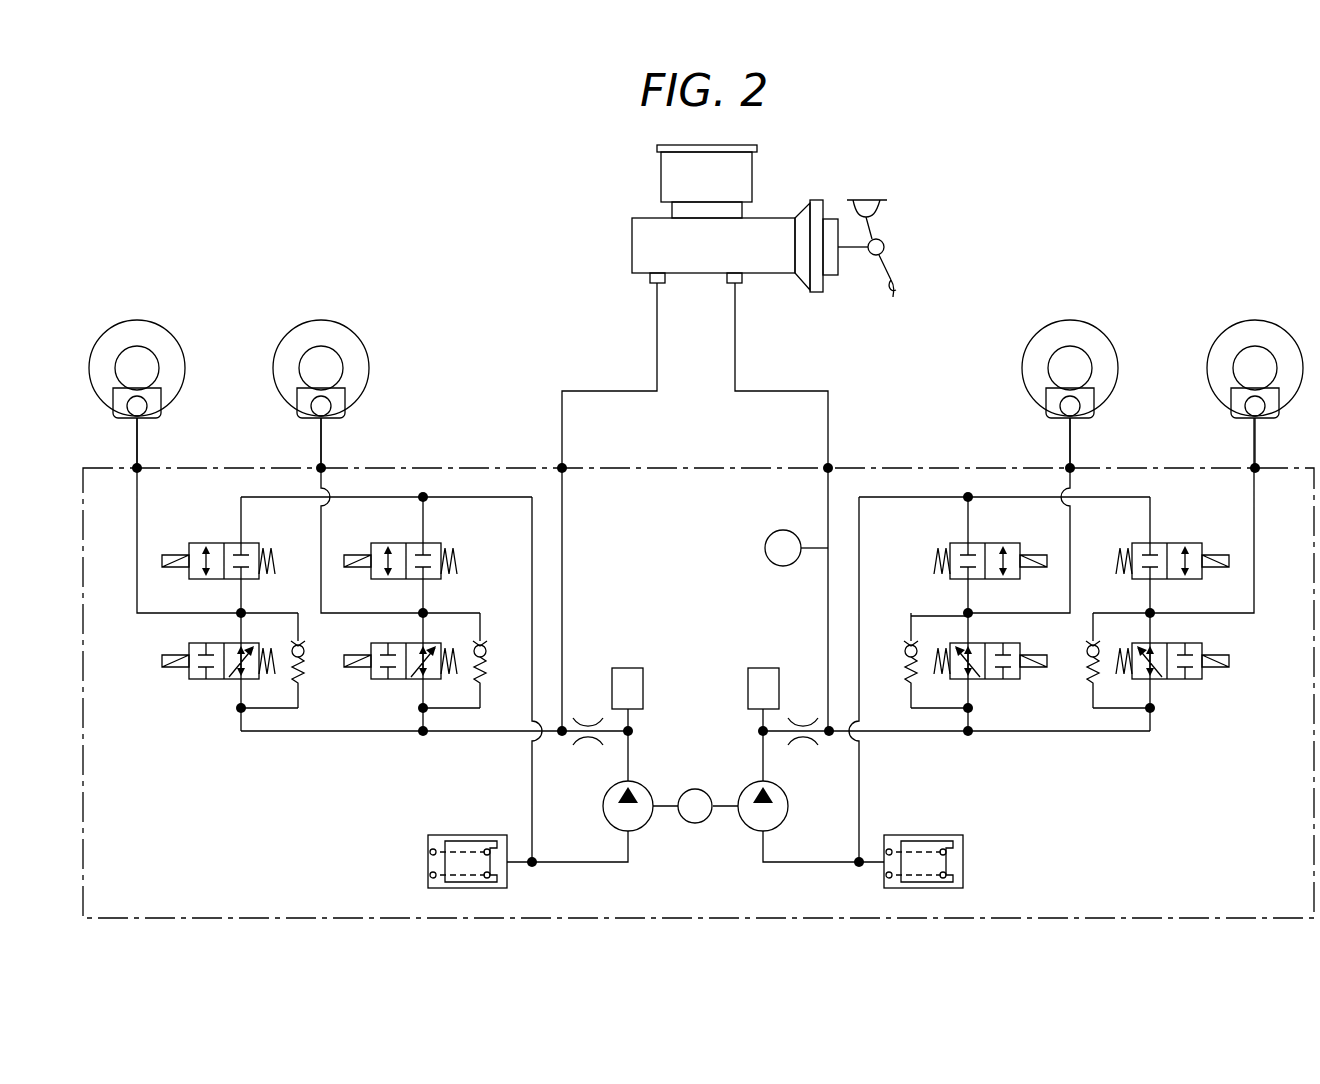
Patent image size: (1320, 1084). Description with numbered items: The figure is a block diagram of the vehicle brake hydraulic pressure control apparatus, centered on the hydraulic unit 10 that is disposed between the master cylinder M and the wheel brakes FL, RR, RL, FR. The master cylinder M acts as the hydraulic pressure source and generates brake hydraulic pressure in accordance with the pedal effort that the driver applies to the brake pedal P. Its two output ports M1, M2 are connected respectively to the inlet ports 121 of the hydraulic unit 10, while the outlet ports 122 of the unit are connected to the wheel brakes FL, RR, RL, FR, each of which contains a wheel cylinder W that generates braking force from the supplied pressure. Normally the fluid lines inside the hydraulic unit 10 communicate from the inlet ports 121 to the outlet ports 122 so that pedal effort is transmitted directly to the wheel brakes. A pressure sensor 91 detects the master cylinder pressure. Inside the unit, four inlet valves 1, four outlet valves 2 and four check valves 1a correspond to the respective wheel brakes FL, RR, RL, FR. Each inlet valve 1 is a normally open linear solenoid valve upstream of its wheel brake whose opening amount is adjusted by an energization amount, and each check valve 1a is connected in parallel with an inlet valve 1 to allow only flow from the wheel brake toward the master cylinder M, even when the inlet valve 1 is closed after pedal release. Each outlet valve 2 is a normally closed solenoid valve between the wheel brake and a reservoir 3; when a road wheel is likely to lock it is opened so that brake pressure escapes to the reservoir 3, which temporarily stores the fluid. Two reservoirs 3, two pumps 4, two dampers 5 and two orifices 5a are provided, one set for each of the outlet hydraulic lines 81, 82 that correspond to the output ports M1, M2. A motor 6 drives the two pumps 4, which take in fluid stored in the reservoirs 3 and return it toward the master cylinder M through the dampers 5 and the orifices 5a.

The hydraulic unit 10 is at (700, 466).
The wheel brake FL is at (135, 317).
The wheel brake RR is at (319, 317).
The wheel brake RL is at (1073, 317).
The wheel brake FR is at (1258, 317).
The wheel cylinder W is at (122, 412).
The outlet port 122 is at (140, 466).
The master cylinder M is at (632, 240).
The output port M1 is at (650, 283).
The output port M2 is at (743, 283).
The brake pedal P is at (897, 287).
The outlet hydraulic line 81 is at (561, 398).
The outlet hydraulic line 82 is at (830, 398).
The inlet port 121 is at (562, 466).
The pressure sensor 91 is at (771, 534).
The outlet valve 2 is at (199, 543).
The inlet valve 1 is at (198, 680).
The check valve 1a is at (304, 660).
The damper 5 is at (628, 668).
The orifice 5a is at (588, 725).
The motor 6 is at (697, 790).
The pump 4 is at (641, 828).
The reservoir 3 is at (418, 855).